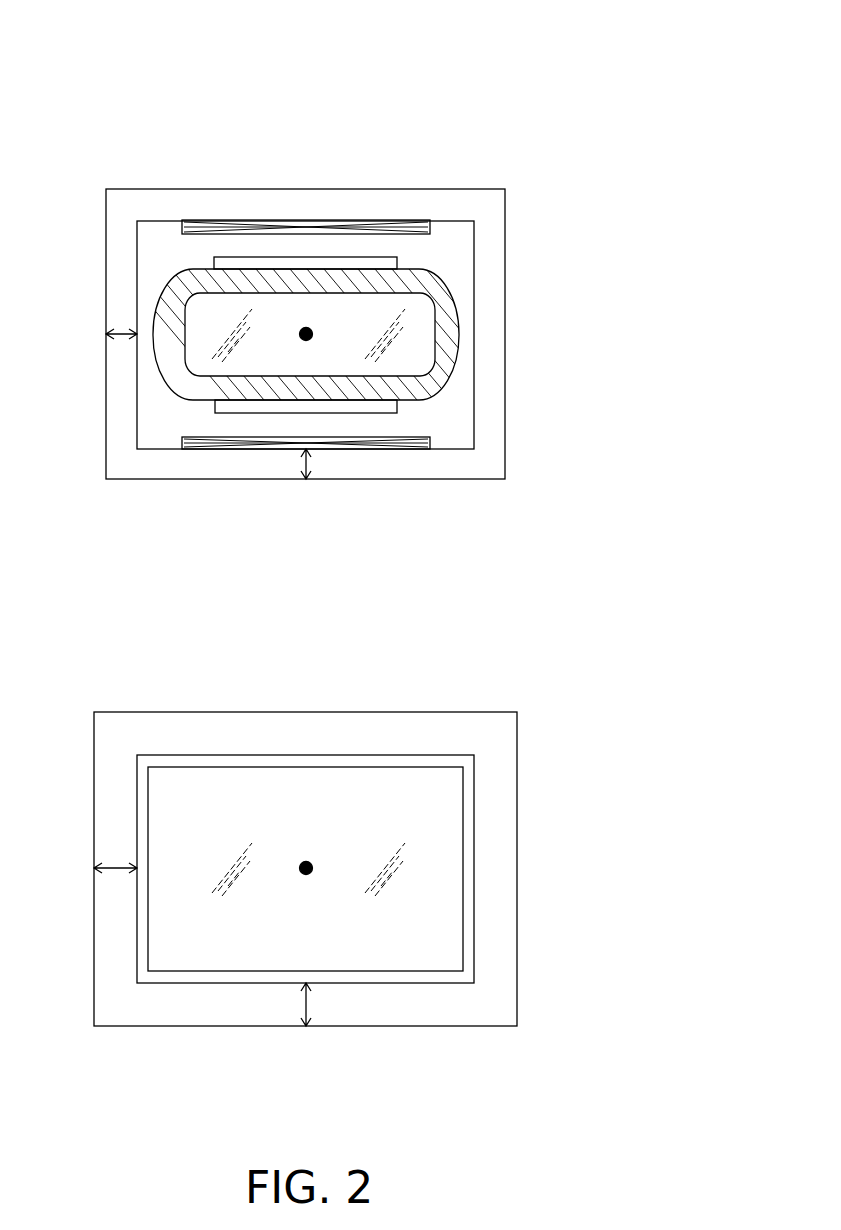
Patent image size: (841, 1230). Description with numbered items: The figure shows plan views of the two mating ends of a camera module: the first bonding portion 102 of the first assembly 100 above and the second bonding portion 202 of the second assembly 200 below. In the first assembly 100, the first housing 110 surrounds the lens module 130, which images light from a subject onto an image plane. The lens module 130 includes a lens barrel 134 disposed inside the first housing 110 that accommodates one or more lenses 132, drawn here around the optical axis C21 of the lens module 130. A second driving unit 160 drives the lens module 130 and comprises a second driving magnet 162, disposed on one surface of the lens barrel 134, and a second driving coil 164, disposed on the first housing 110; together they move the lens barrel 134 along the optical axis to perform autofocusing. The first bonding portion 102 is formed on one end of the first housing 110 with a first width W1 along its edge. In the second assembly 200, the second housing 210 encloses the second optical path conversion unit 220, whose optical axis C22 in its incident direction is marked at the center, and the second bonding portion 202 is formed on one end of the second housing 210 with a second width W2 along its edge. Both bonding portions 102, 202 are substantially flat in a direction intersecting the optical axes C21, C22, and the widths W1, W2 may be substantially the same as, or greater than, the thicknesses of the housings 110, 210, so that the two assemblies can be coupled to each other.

The first assembly 100 is at (323, 275).
The first bonding portion 102 is at (166, 462).
The first housing 110 is at (505, 243).
The lens module 130 is at (328, 250).
The lens 132 is at (275, 316).
The lens barrel 134 is at (200, 283).
The second driving unit 160 is at (319, 274).
The second driving magnet 162 is at (385, 262).
The second driving coil 164 is at (358, 228).
The optical axis of the lens module C21 is at (306, 334).
The first width W1 is at (122, 336).
The second assembly 200 is at (326, 822).
The second bonding portion 202 is at (486, 1003).
The second housing 210 is at (517, 765).
The second optical path conversion unit 220 is at (455, 810).
The optical axis in incident direction of the second optical path conversion unit C22 is at (306, 868).
The second width W2 is at (115, 870).